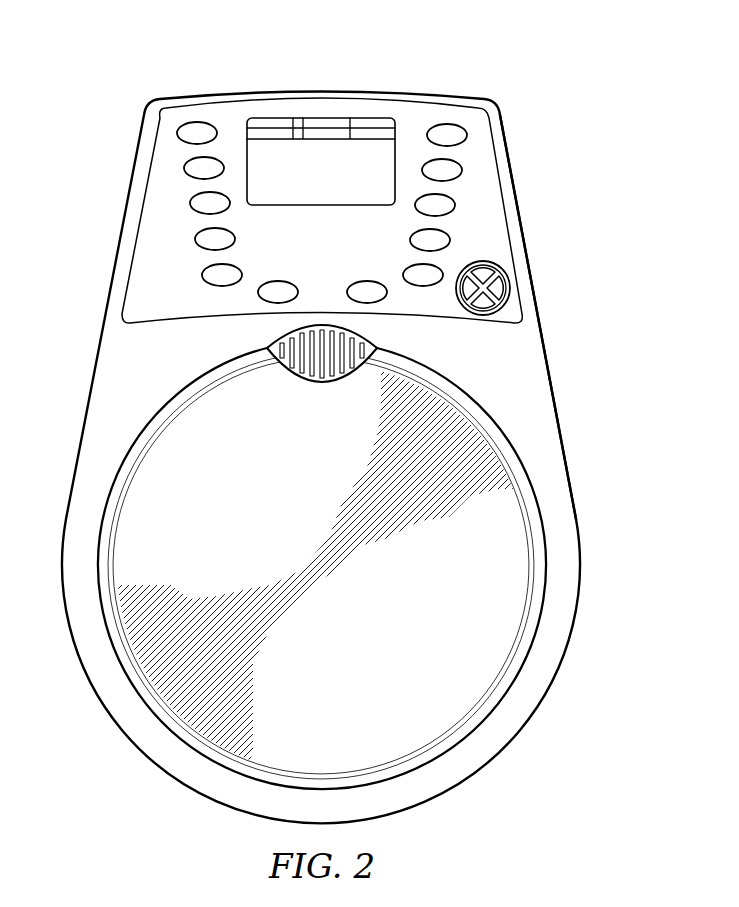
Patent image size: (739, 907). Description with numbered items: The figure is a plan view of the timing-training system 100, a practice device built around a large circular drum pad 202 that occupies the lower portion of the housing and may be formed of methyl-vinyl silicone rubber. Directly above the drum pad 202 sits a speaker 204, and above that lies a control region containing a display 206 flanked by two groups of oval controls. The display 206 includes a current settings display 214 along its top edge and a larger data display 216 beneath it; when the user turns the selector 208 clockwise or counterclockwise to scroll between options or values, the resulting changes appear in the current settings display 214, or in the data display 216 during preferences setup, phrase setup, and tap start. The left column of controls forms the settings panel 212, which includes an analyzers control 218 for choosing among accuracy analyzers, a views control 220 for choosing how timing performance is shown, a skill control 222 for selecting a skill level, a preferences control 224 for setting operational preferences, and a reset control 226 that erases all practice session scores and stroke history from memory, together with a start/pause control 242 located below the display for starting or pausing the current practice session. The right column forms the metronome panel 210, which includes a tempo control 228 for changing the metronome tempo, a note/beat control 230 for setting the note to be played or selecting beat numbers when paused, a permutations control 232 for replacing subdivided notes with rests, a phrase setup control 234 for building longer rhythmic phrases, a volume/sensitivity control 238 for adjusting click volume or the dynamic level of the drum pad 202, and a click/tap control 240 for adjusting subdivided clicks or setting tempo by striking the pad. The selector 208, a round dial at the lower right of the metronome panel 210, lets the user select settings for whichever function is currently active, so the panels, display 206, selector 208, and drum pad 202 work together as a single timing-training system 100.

The timing-training system 100 is at (522, 50).
The drum pad 202 is at (378, 646).
The speaker 204 is at (275, 347).
The display 206 is at (366, 116).
The selector 208 is at (500, 290).
The metronome panel 210 is at (498, 140).
The settings panel 212 is at (146, 140).
The current settings display 214 is at (326, 124).
The data display 216 is at (303, 184).
The analyzers control 218 is at (197, 130).
The views control 220 is at (200, 168).
The skill control 222 is at (206, 203).
The preferences control 224 is at (211, 239).
The reset control 226 is at (218, 275).
The tempo control 228 is at (447, 132).
The note/beat control 230 is at (446, 170).
The permutations control 232 is at (439, 205).
The phrase setup control 234 is at (434, 240).
The volume/sensitivity control 238 is at (423, 278).
The click/tap control 240 is at (367, 290).
The start/pause control 242 is at (278, 290).